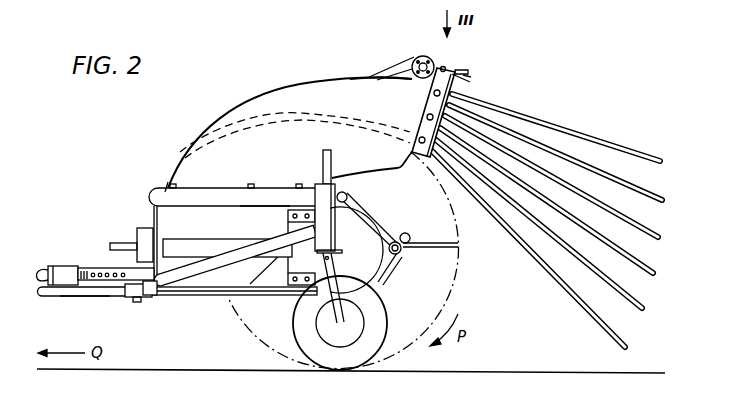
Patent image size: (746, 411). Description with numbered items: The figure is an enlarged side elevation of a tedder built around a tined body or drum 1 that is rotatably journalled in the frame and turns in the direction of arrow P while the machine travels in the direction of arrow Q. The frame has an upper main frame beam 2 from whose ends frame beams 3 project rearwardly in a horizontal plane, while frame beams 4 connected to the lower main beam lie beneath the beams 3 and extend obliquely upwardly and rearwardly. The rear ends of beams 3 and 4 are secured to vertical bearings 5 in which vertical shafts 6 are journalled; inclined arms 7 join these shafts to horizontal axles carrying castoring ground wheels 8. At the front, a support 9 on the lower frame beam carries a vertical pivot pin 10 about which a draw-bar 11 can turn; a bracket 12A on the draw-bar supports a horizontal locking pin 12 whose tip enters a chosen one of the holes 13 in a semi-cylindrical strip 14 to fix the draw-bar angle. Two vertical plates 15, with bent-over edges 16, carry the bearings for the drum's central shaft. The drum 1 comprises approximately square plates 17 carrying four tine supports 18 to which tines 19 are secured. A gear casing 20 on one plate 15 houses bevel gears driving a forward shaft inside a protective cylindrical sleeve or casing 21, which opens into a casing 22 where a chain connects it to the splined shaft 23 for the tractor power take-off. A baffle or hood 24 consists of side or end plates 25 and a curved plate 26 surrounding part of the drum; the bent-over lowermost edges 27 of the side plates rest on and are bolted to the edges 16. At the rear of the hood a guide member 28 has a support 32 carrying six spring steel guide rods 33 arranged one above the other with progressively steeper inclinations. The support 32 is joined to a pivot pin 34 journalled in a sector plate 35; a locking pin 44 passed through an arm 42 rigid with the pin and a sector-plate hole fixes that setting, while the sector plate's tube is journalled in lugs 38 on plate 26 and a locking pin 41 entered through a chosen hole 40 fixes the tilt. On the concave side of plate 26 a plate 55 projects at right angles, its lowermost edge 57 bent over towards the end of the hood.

The tined body or drum 1 is at (462, 281).
The upper main frame beam 2 is at (148, 194).
The frame beams 3 is at (209, 183).
The frame beams 4 is at (240, 249).
The vertical bearings 5 is at (336, 246).
The vertical shafts 6 is at (331, 164).
The inclined arms 7 is at (342, 318).
The ground wheels 8 is at (343, 373).
The support 9 is at (153, 297).
The vertical pivot pin 10 is at (132, 300).
The draw-bar 11 is at (68, 295).
The locking pin 12 is at (42, 268).
The bracket 12A is at (78, 298).
The holes 13 is at (100, 262).
The semi-cylindrical strip 14 is at (78, 268).
The vertical plates 15 is at (220, 288).
The bent-over edges 16 is at (187, 296).
The square plates 17 is at (366, 213).
The tine supports 18 is at (349, 196).
The tines 19 is at (435, 243).
The gear casing 20 is at (378, 284).
The protective cylindrical sleeve or casing 21 is at (192, 229).
The casing 22 is at (141, 228).
The shaft 23 is at (112, 243).
The baffle or hood 24 is at (162, 168).
The side or end plates 25 is at (397, 169).
The curved plate 26 is at (294, 123).
The lowermost edges 27 is at (266, 171).
The guide member 28 is at (598, 328).
The support 32 is at (457, 96).
The spring steel guide rods 33 is at (658, 164).
The pivot pin 34 is at (445, 66).
The sector plate 35 is at (460, 89).
The lugs 38 is at (377, 78).
The holes 40 is at (427, 56).
The locking pin 41 is at (397, 71).
The arm 42 is at (467, 73).
The locking pin 44 is at (462, 69).
The plate 55 is at (220, 119).
The lowermost edge 57 is at (305, 126).